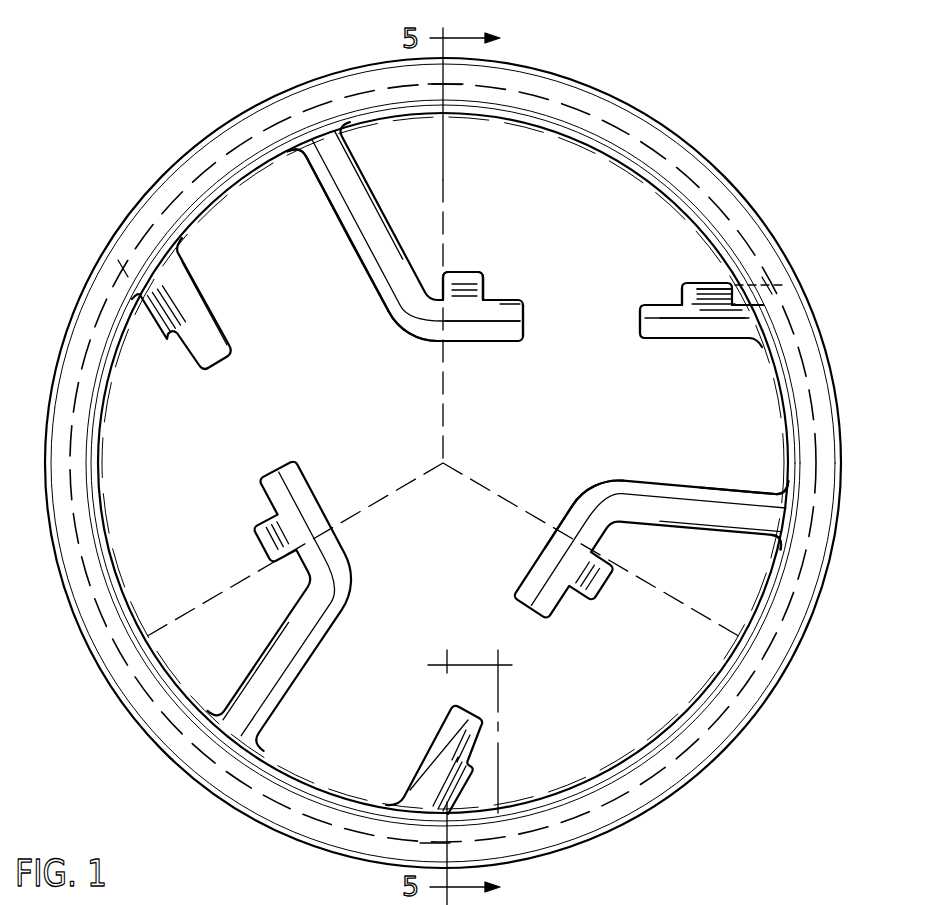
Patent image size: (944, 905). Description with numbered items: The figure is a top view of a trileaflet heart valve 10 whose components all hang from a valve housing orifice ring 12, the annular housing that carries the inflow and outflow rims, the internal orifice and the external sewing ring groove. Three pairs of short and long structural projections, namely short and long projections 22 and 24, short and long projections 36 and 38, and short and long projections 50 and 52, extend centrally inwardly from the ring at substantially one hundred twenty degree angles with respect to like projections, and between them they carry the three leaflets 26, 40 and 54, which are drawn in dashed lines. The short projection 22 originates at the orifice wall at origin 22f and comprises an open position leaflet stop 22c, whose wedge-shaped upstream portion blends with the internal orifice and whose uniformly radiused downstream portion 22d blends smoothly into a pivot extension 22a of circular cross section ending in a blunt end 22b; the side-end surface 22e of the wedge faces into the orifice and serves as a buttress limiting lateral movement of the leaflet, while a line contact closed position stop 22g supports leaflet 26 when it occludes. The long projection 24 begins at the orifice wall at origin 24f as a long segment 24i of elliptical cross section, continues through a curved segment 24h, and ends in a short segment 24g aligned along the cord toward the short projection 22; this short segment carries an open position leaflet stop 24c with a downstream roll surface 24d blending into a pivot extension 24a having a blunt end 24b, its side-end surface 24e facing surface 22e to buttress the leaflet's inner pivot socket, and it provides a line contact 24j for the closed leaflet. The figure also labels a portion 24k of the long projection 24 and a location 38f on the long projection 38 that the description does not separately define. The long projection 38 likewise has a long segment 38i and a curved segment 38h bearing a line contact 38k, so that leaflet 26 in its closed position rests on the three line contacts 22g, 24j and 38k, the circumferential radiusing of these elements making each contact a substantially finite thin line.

The trileaflet heart valve 10 is at (722, 128).
The valve housing orifice ring 12 is at (592, 86).
The short projection 22 is at (618, 293).
The pivot extension 22a is at (658, 305).
The blunt end 22b is at (642, 325).
The open position leaflet stop 22c is at (720, 295).
The downstream portion of the open position leaflet stop 22d is at (713, 310).
The side-end surface 22e is at (682, 295).
The origin 22f is at (757, 317).
The line contact closed position stop 22g is at (695, 323).
The long projection 24 is at (392, 230).
The pivot extension 24a is at (497, 301).
The blunt end 24b is at (527, 326).
The open position leaflet stop 24c is at (463, 277).
The downstream roll surface 24d is at (510, 312).
The side-end surface 24e is at (485, 286).
The origin 24f is at (315, 137).
The short segment 24g is at (488, 343).
The curved segment 24h is at (383, 322).
The long segment 24i is at (338, 243).
The line contact 24j is at (478, 322).
The spoke straight portion 24k is at (368, 270).
The leaflet 26 is at (605, 442).
The short projection 36 is at (410, 721).
The long projection 38 is at (680, 530).
The spoke foot 38f is at (787, 513).
The curved segment 38h is at (580, 492).
The long segment 38i is at (728, 485).
The line contact 38k is at (633, 497).
The leaflet 40 is at (444, 562).
The short projection 50 is at (222, 316).
The long projection 52 is at (276, 613).
The leaflet 54 is at (205, 447).